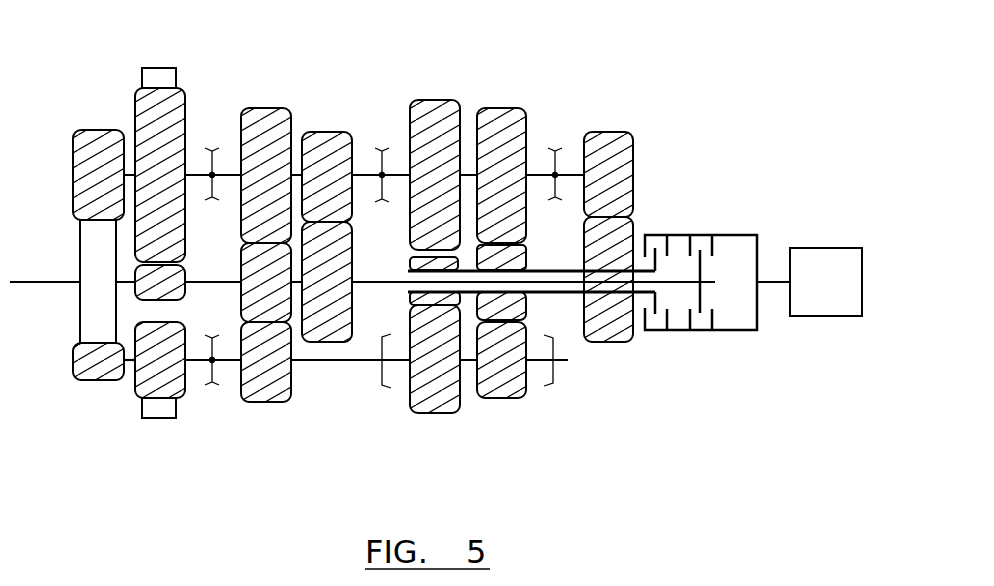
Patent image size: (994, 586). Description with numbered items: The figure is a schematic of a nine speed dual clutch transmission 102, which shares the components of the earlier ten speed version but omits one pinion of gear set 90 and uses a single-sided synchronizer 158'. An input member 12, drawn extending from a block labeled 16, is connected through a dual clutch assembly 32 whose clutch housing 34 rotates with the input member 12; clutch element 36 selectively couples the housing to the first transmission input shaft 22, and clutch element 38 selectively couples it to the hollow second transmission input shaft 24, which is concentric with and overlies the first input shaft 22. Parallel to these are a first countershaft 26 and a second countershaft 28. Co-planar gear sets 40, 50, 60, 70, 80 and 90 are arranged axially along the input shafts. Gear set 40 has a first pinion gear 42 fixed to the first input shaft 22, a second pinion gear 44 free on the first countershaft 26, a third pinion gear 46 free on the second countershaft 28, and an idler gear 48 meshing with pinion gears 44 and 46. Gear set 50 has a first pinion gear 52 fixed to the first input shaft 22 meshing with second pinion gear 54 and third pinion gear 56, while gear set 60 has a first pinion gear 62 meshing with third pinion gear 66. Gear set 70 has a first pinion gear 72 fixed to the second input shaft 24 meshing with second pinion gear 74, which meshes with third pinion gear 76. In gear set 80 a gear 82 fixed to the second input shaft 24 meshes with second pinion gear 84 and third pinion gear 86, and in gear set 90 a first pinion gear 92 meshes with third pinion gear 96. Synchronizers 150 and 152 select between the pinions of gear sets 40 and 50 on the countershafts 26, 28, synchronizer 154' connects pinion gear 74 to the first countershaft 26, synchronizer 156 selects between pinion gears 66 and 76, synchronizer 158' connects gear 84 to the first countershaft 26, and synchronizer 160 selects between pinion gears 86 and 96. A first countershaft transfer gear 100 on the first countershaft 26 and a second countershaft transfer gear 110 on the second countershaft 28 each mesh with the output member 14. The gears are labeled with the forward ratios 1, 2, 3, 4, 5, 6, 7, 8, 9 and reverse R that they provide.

The first gear ratio 1 is at (153, 186).
The second gear ratio 2 is at (428, 396).
The third gear ratio 3 is at (153, 371).
The fourth gear ratio 4 is at (494, 211).
The fifth gear ratio 5 is at (259, 211).
The sixth gear ratio 6 is at (494, 371).
The seventh gear ratio 7 is at (259, 371).
The eighth gear ratio 8 is at (601, 184).
The ninth gear ratio 9 is at (320, 211).
The reverse gear ratio R is at (427, 201).
The input member 12 is at (772, 283).
The output member 14 is at (87, 293).
The engine 16 is at (815, 293).
The first transmission input shaft 22 is at (715, 280).
The second transmission input shaft 24 is at (565, 268).
The first countershaft 26 is at (333, 361).
The second countershaft 28 is at (572, 172).
The dual clutch assembly 32 is at (737, 215).
The clutch housing 34 is at (684, 233).
The first clutch element 36 is at (713, 313).
The second clutch element 38 is at (667, 317).
The co-planar gear set 40 is at (173, 435).
The first pinion gear 42 is at (149, 294).
The second pinion gear 44 is at (130, 385).
The third pinion gear 46 is at (145, 113).
The idler gear 48 is at (158, 68).
The co-planar gear set 50 is at (264, 418).
The first pinion gear 52 is at (255, 294).
The second pinion gear 54 is at (240, 385).
The third pinion gear 56 is at (255, 166).
The co-planar gear set 60 is at (330, 106).
The first pinion gear 62 is at (316, 294).
The third pinion gear 66 is at (316, 166).
The co-planar gear set 70 is at (422, 432).
The first pinion gear 72 is at (408, 298).
The second pinion gear 74 is at (424, 341).
The third pinion gear 76 is at (424, 141).
The co-planar gear set 80 is at (507, 95).
The gear 82 is at (490, 316).
The second pinion gear 84 is at (513, 400).
The third pinion gear 86 is at (490, 159).
The co-planar gear set 90 is at (618, 362).
The first pinion gear 92 is at (635, 228).
The third pinion gear 96 is at (635, 148).
The first countershaft transfer gear 100 is at (82, 372).
The nine speed dual clutch transmission 102 is at (747, 99).
The second countershaft transfer gear 110 is at (82, 186).
The synchronizer 150 is at (212, 335).
The synchronizer 152 is at (217, 148).
The single-sided synchronizer 154' is at (359, 393).
The synchronizer 156 is at (383, 148).
The single-sided synchronizer 158' is at (562, 393).
The synchronizer 160 is at (556, 148).